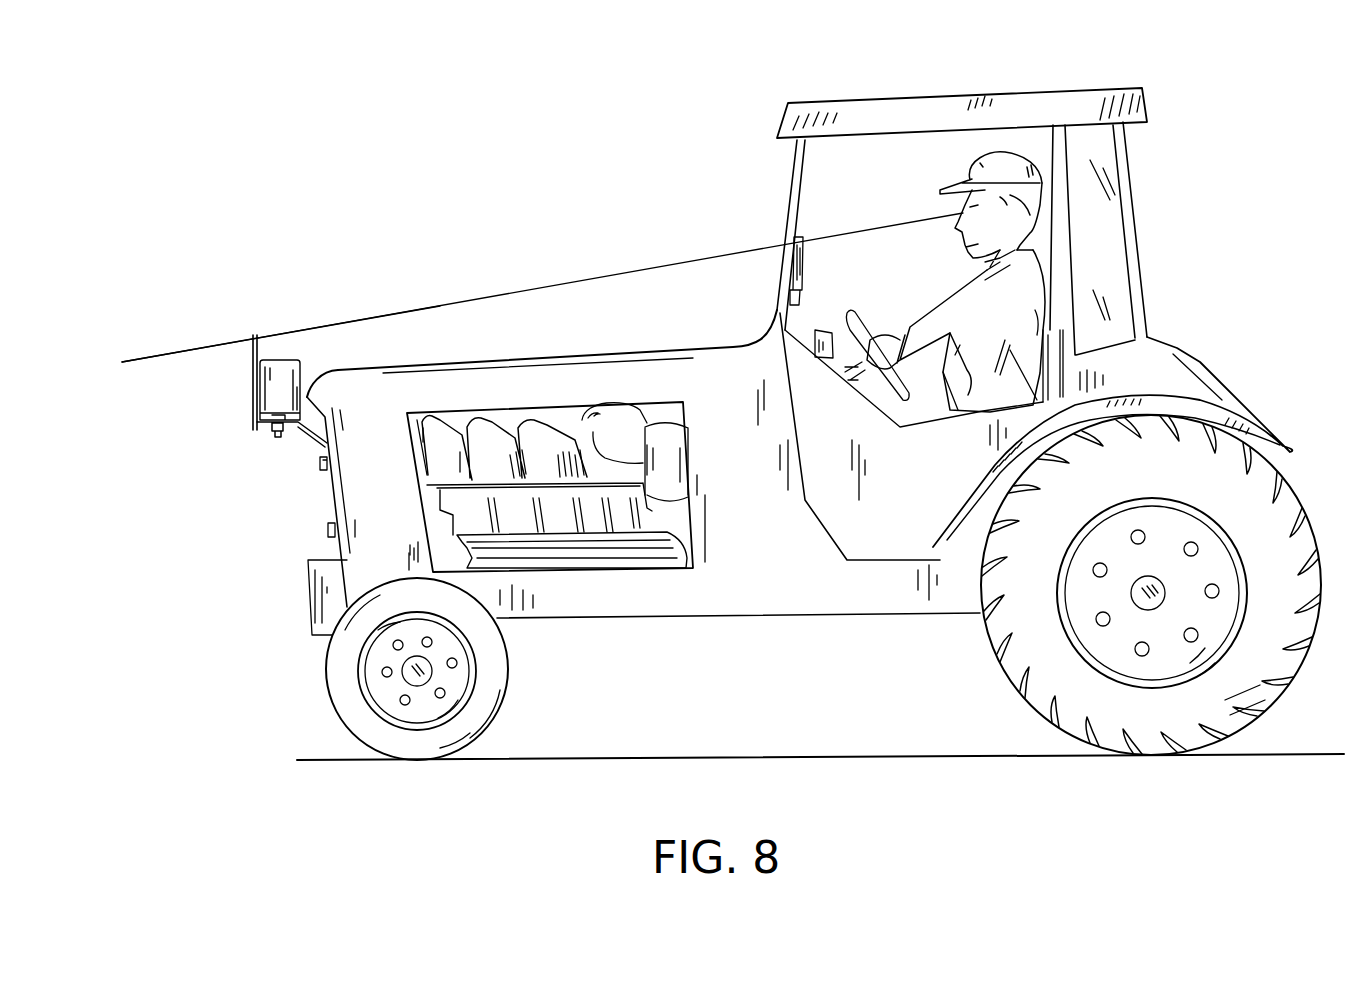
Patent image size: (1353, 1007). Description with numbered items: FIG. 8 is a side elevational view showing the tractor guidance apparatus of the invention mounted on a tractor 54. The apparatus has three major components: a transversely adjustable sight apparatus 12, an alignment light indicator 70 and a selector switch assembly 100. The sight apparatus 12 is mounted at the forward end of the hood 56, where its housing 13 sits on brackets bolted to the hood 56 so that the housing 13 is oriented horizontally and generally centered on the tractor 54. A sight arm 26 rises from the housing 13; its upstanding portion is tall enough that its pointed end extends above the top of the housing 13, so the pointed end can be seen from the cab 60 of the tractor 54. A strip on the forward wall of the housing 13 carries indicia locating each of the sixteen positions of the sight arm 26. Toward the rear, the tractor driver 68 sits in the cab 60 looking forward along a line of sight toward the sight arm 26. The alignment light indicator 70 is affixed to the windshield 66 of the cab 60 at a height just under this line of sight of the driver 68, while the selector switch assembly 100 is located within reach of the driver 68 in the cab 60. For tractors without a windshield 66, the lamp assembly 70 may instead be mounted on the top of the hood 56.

The sight apparatus 12 is at (317, 308).
The housing 13 is at (300, 368).
The sight arm 26 is at (252, 405).
The tractor 54 is at (666, 641).
The hood 56 is at (315, 437).
The cab 60 is at (935, 138).
The windshield 66 is at (790, 185).
The tractor driver 68 is at (1030, 300).
The alignment light indicator 70 is at (806, 269).
The selector switch assembly 100 is at (822, 322).